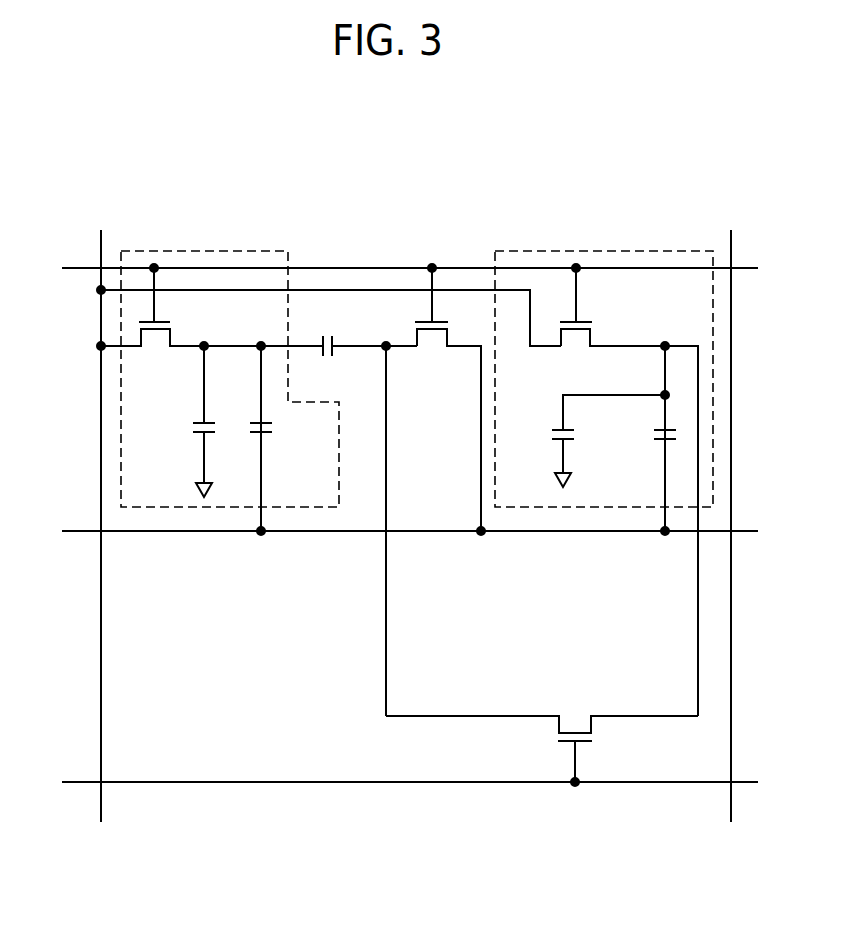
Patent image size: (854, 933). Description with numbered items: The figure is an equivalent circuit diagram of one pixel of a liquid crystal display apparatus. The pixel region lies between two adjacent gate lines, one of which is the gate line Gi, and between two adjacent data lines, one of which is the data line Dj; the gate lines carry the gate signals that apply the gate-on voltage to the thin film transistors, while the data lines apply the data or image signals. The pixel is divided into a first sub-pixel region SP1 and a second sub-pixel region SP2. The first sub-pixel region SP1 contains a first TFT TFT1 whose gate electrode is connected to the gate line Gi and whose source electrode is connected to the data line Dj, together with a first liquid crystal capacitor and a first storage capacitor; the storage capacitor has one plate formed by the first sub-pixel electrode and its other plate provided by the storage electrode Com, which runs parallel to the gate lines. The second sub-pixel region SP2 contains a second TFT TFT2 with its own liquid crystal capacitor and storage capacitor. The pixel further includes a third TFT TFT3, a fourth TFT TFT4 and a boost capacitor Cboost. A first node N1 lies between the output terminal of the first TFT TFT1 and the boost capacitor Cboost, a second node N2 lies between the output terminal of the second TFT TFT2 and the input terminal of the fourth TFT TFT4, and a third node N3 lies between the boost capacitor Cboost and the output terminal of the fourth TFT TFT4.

The data line Dj is at (99, 513).
The gate line Gi is at (396, 266).
The storage electrode Com is at (385, 530).
The first sub-pixel region SP1 is at (242, 251).
The second sub-pixel region SP2 is at (627, 251).
The first TFT TFT1 is at (152, 322).
The second TFT TFT2 is at (623, 492).
The third TFT TFT3 is at (444, 399).
The fourth TFT TFT4 is at (542, 732).
The boost capacitor Cboost is at (357, 332).
The first node N1 is at (260, 334).
The second node N2 is at (664, 334).
The third node N3 is at (385, 517).